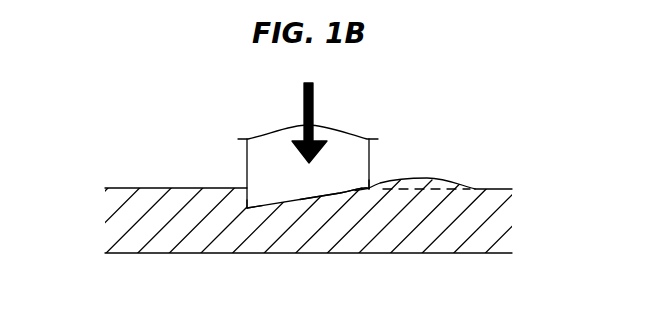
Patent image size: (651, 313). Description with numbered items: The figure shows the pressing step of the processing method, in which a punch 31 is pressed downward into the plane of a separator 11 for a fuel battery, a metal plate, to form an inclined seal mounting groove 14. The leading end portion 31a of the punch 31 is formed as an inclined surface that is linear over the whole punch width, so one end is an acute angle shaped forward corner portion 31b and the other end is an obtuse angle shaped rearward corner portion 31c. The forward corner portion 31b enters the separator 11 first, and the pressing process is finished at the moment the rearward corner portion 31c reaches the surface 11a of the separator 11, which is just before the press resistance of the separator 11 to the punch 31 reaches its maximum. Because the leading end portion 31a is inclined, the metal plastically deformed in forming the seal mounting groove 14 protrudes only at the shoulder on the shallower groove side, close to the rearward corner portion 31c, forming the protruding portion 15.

The separator 11 is at (310, 192).
The surface of the separator 11a is at (152, 187).
The seal mounting groove 14 is at (336, 192).
The protruding portion 15 is at (418, 180).
The punch 31 is at (297, 200).
The leading end portion 31a is at (330, 195).
The acute angle shaped forward corner portion 31b is at (247, 209).
The obtuse angle shaped rearward corner portion 31c is at (371, 192).